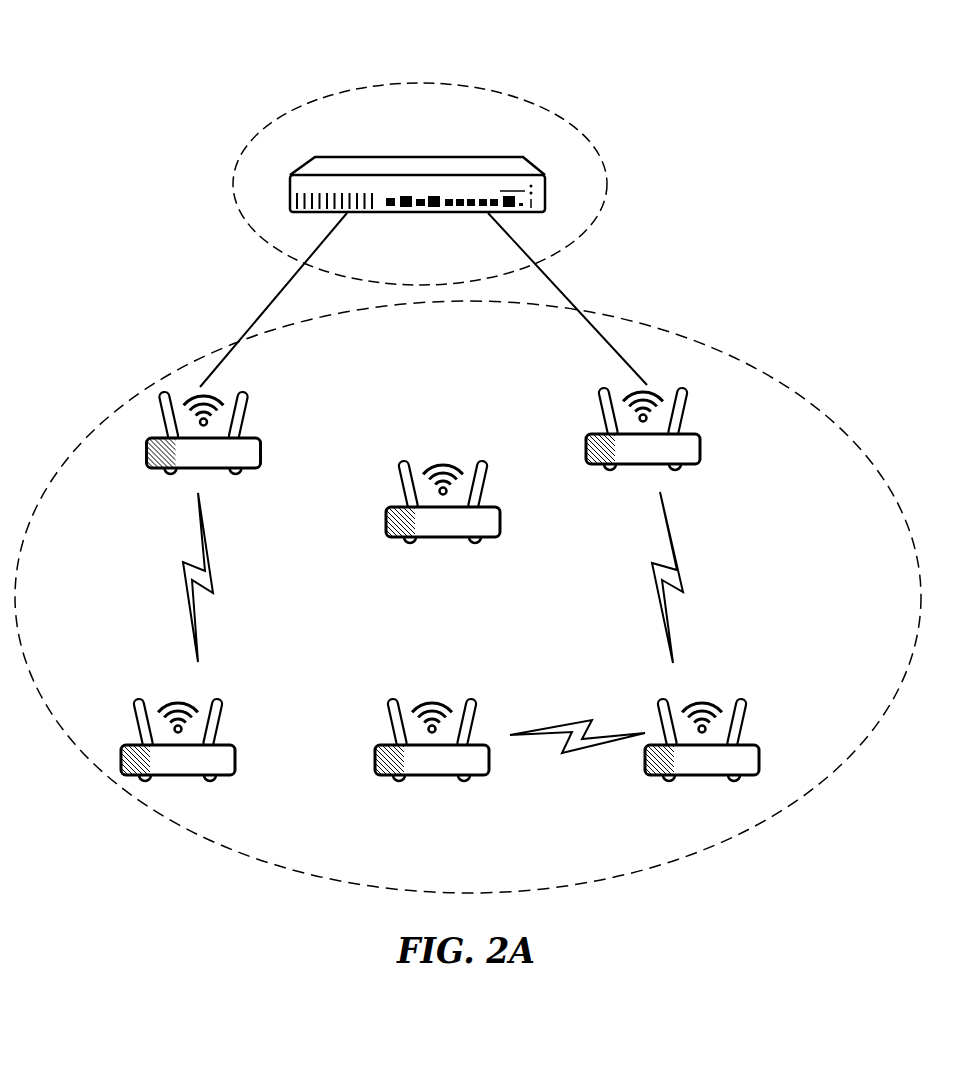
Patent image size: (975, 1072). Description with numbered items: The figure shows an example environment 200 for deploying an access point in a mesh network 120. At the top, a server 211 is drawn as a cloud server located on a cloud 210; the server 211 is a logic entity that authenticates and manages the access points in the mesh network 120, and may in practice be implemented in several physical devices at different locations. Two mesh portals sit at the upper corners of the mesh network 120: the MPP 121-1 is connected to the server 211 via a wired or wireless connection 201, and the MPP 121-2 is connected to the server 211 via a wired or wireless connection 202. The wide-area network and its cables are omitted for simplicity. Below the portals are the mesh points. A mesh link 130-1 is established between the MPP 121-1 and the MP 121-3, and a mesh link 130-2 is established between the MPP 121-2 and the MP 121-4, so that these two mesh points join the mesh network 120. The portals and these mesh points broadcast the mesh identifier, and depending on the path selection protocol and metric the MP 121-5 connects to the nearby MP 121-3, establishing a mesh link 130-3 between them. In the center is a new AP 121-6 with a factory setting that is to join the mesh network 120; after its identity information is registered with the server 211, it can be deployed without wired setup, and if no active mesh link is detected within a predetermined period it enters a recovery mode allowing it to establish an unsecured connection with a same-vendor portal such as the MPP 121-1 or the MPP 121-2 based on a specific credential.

The environment 200 is at (156, 81).
The cloud 210 is at (548, 108).
The server 211 is at (433, 156).
The wired or wireless connection 201 is at (563, 300).
The wired or wireless connection 202 is at (279, 291).
The mesh network 120 is at (775, 380).
The MPP 121-1 is at (684, 392).
The MPP 121-2 is at (243, 396).
The MP 121-3 is at (744, 704).
The MP 121-4 is at (221, 704).
The MP 121-5 is at (475, 704).
The AP 121-6 is at (484, 466).
The mesh link 130-1 is at (679, 556).
The mesh link 130-2 is at (209, 556).
The mesh link 130-3 is at (575, 722).